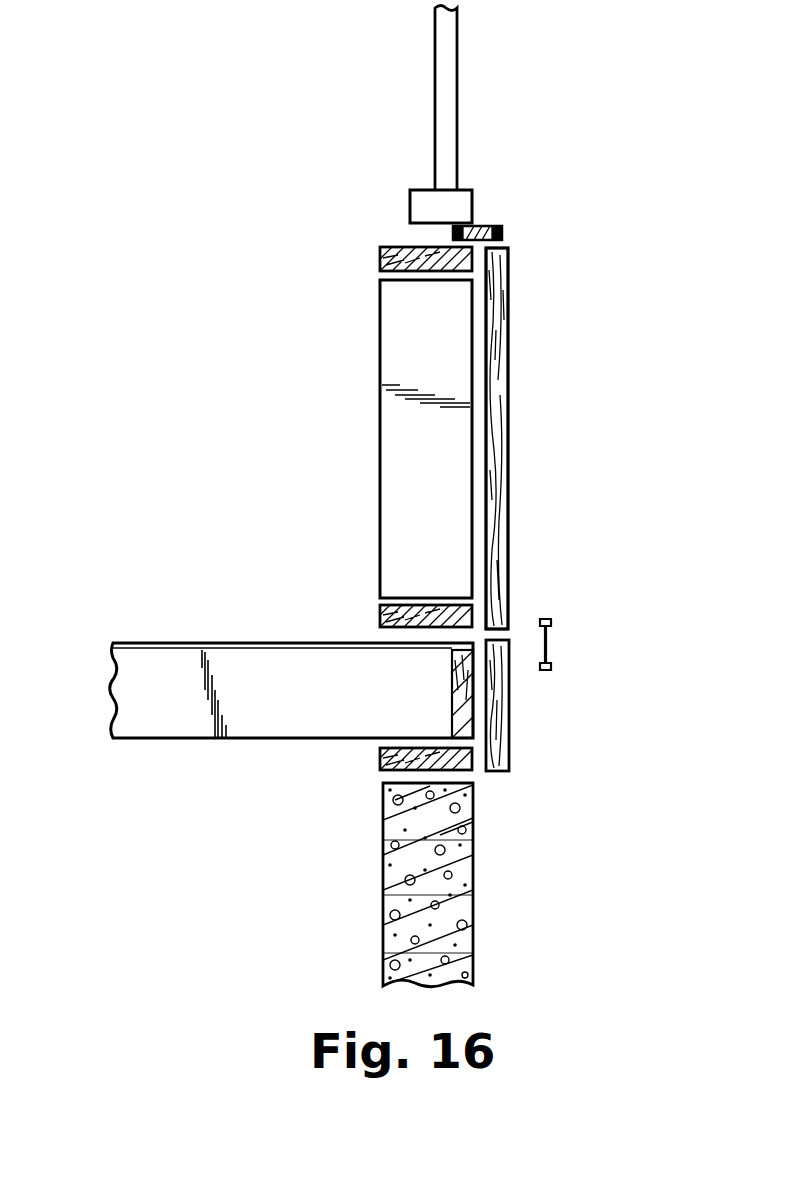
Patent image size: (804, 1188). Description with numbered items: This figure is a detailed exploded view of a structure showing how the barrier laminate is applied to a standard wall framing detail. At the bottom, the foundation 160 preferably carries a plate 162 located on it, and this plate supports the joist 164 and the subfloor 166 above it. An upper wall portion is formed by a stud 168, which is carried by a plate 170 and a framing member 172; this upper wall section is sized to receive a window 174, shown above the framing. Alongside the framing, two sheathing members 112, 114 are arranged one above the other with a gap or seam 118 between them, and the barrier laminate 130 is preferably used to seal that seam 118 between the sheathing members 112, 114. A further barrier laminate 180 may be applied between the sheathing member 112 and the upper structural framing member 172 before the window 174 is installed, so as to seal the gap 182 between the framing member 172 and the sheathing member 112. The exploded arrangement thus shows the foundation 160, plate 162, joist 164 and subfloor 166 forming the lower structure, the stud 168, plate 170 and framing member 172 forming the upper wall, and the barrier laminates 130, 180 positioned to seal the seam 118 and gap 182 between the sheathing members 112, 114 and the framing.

The sheathing member 112 is at (490, 421).
The sheathing member 114 is at (512, 705).
The gap / joint between panels 118 is at (500, 634).
The barrier laminate 130 is at (553, 638).
The foundation 160 is at (383, 860).
The plate 162 is at (382, 762).
The joist 164 is at (120, 690).
The subfloor 166 is at (178, 642).
The stud 168 is at (397, 480).
The plate 170 is at (383, 615).
The framing member 172 is at (395, 250).
The window 174 is at (458, 70).
The barrier laminate 180 is at (500, 229).
The gap 182 is at (487, 262).